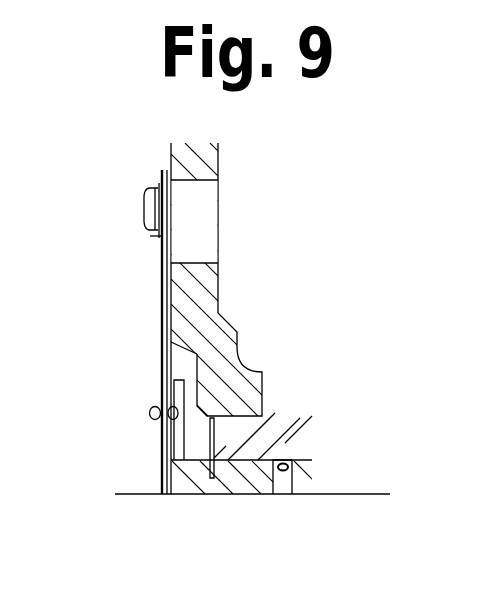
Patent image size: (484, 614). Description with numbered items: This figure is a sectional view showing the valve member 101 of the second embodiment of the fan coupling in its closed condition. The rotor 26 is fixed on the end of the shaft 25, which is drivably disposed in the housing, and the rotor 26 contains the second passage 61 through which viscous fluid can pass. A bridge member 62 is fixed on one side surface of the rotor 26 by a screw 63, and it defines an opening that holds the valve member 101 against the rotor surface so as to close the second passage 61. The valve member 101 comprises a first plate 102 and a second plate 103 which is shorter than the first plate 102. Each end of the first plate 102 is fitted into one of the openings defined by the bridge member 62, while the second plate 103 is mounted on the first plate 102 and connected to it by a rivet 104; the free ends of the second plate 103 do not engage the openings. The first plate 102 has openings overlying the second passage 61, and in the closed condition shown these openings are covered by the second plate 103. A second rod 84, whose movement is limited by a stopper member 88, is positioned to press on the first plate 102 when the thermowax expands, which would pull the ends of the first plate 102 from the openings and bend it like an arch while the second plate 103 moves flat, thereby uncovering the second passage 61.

The shaft 25 is at (287, 444).
The rotor 26 is at (244, 397).
The second passage 61 is at (207, 213).
The bridge member 62 is at (158, 237).
The screw 63 is at (150, 209).
The second rod 84 is at (258, 478).
The stopper member 88 is at (215, 470).
The valve member 101 is at (158, 331).
The first plate 102 is at (188, 355).
The second plate 103 is at (188, 350).
The rivet 104 is at (149, 413).